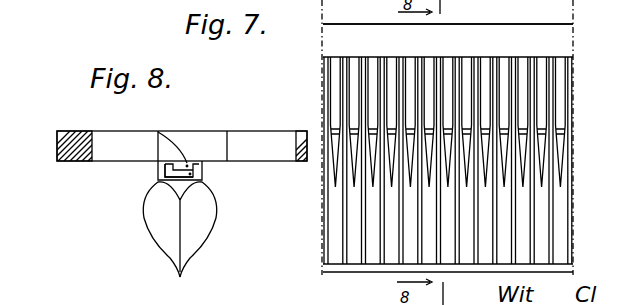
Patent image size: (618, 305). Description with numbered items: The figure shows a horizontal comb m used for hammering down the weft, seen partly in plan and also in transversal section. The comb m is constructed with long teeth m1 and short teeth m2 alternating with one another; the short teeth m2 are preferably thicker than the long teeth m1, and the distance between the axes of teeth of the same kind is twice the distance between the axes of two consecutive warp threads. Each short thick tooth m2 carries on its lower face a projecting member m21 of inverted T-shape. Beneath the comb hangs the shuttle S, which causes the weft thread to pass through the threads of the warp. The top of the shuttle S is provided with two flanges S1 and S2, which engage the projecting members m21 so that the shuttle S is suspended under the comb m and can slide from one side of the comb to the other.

In FIG. 7, the comb m is at (335, 32).
In FIG. 8, the comb m is at (72, 160).
In FIG. 7, the long teeth m1 is at (377, 213).
In FIG. 8, the long teeth m1 is at (245, 135).
In FIG. 7, the short teeth m2 is at (393, 115).
In FIG. 8, the short teeth m2 is at (182, 135).
In FIG. 8, the projecting member m21 is at (188, 174).
In FIG. 8, the shuttle S is at (203, 230).
In FIG. 8, the flange S1 is at (163, 167).
In FIG. 8, the flange S2 is at (158, 132).